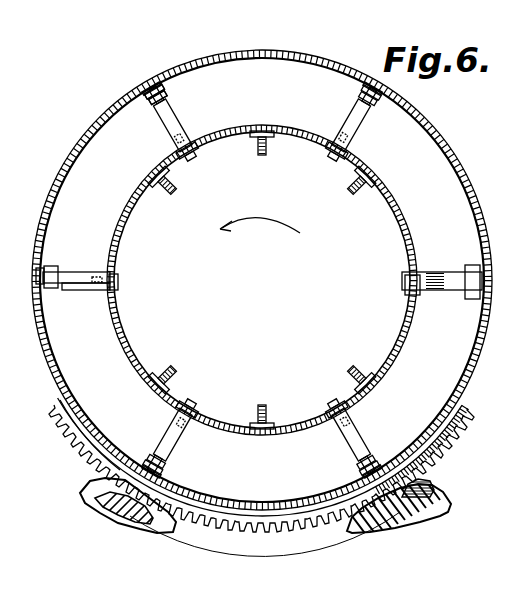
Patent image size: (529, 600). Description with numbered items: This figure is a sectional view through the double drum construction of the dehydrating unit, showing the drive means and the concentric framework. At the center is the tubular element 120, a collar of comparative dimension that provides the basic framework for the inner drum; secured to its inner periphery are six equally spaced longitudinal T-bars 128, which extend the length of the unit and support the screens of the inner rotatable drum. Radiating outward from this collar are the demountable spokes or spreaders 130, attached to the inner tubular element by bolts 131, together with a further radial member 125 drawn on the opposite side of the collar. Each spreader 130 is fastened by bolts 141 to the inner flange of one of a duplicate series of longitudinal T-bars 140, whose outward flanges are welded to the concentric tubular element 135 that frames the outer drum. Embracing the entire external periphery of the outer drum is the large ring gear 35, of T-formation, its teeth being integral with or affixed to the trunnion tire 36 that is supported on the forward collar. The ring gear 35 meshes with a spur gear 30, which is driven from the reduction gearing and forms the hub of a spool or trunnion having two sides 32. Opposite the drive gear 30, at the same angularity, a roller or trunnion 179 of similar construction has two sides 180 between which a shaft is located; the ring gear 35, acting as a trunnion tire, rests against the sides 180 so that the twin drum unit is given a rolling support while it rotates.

The spur gear 30 is at (427, 494).
The sides 32 is at (452, 507).
The ring gear 35 is at (278, 530).
The trunnion tire 36 is at (203, 515).
The tubular element 120 is at (156, 387).
The radial brace 125 is at (478, 268).
The T-bars 128 is at (261, 157).
The spreaders 130 is at (77, 271).
The bolts 131 is at (118, 280).
The tubular element 135 is at (80, 418).
The T-bars 140 is at (146, 98).
The bolts 141 is at (162, 97).
The trunnion 179 is at (118, 520).
The sides 180 is at (85, 490).